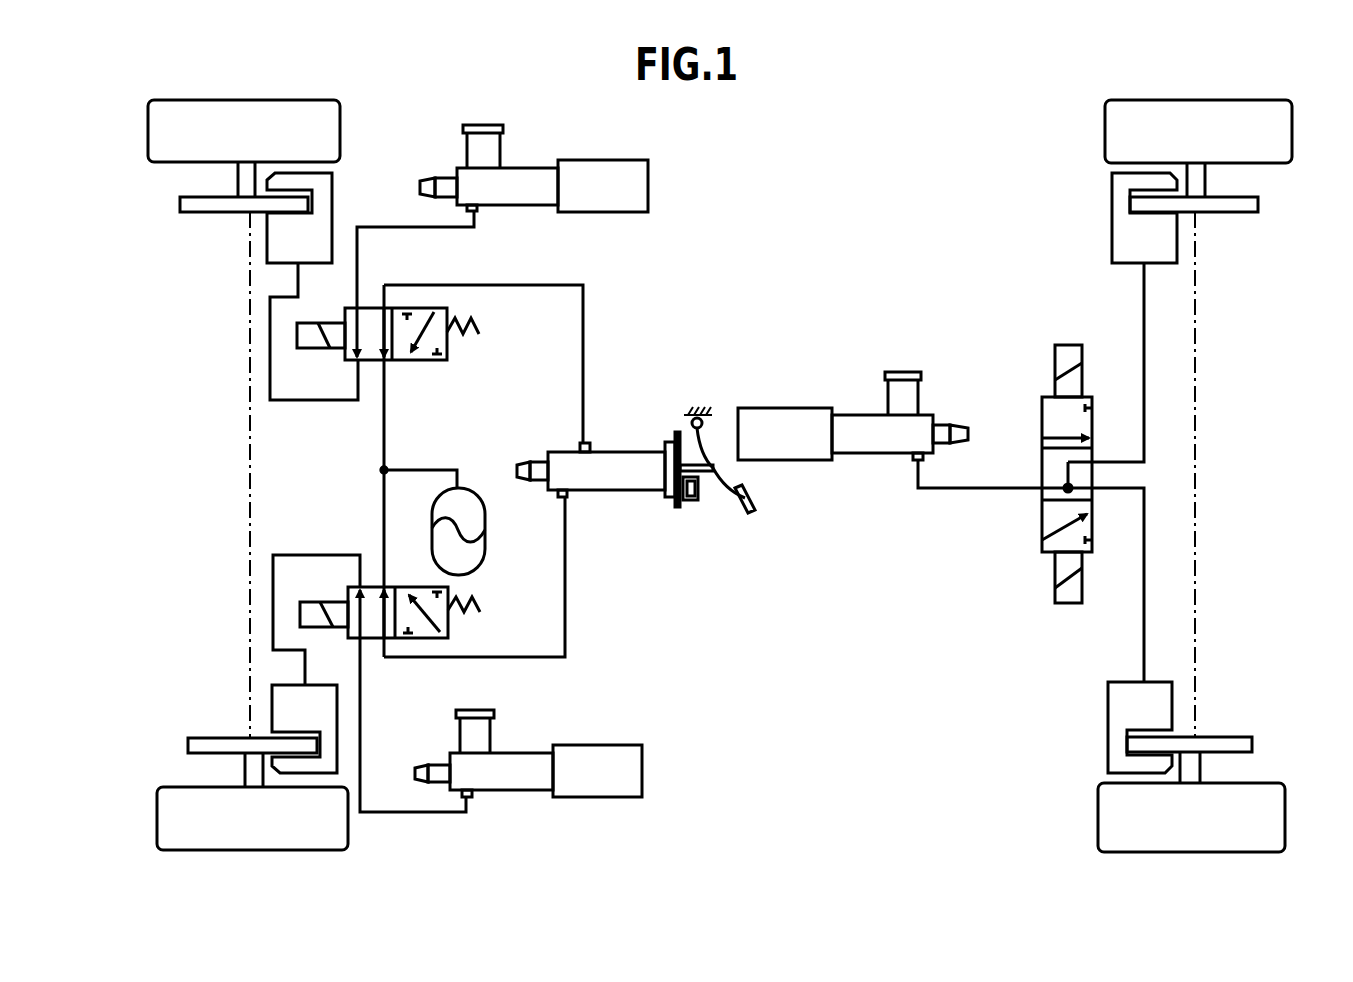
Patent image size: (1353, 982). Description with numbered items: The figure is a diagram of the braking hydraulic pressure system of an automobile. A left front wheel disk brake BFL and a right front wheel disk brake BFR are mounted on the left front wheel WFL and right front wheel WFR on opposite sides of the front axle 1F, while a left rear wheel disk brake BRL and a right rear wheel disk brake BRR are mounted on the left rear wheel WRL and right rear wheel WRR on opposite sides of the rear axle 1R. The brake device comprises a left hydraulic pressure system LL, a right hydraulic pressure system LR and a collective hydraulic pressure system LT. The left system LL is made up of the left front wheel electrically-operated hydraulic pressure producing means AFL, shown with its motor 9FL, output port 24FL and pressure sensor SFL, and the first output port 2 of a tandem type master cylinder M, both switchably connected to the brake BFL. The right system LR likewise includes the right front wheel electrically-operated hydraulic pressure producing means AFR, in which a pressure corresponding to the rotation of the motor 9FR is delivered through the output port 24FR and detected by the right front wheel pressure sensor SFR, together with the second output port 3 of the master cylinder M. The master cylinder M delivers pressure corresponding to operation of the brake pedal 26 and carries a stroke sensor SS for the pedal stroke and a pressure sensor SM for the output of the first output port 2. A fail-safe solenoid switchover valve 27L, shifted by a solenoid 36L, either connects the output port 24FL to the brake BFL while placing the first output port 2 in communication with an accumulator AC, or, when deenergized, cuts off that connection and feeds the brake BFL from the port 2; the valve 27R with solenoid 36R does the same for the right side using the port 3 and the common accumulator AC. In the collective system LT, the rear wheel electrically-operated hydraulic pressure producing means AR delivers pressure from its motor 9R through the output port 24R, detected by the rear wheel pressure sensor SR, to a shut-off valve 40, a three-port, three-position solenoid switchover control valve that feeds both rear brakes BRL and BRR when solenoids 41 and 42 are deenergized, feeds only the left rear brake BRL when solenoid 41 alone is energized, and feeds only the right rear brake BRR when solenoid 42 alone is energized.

The right front wheel WFR is at (341, 112).
The right front wheel disk brake BFR is at (340, 178).
The right front wheel pressure sensor SFR is at (420, 188).
The right front wheel electrically-operated hydraulic pressure producing means AFR is at (535, 168).
The motor 9FR is at (648, 176).
The output port 24FR is at (477, 212).
The solenoid 36R is at (308, 322).
The fail-safe solenoid switchover valve 27R is at (447, 352).
The right hydraulic pressure system LR is at (302, 402).
The front axle 1F is at (250, 530).
The left hydraulic pressure system LL is at (302, 555).
The solenoid 36L is at (330, 602).
The fail-safe solenoid switchover valve 27L is at (448, 630).
The left front wheel disk brake BFL is at (326, 682).
The left front wheel WFL is at (348, 840).
The front left stroke sensor SFL is at (427, 764).
The left front wheel electrically-operated hydraulic pressure producing means AFL is at (527, 752).
The output port 24FL is at (472, 799).
The front left actuator motor 9FL is at (612, 797).
The pressure sensor SM is at (518, 464).
The second output port 3 is at (582, 443).
The tandem type master cylinder M is at (620, 452).
The first output port 2 is at (558, 497).
The accumulator AC is at (480, 518).
The brake pedal 26 is at (755, 498).
The stroke sensor SS is at (691, 498).
The motor 9R is at (772, 408).
The rear wheel electrically-operated hydraulic pressure producing means AR is at (855, 415).
The rear wheel pressure sensor SR is at (963, 425).
The output port 24R is at (913, 462).
The collective hydraulic pressure system LT is at (953, 490).
The solenoid 42 is at (1055, 368).
The shut-off valve 40 is at (1042, 442).
The solenoid 41 is at (1055, 590).
The right rear wheel WRR is at (1105, 130).
The right rear wheel disk brake BRR is at (1110, 196).
The rear axle 1R is at (1195, 520).
The left rear wheel disk brake BRL is at (1108, 700).
The left rear wheel WRL is at (1100, 800).